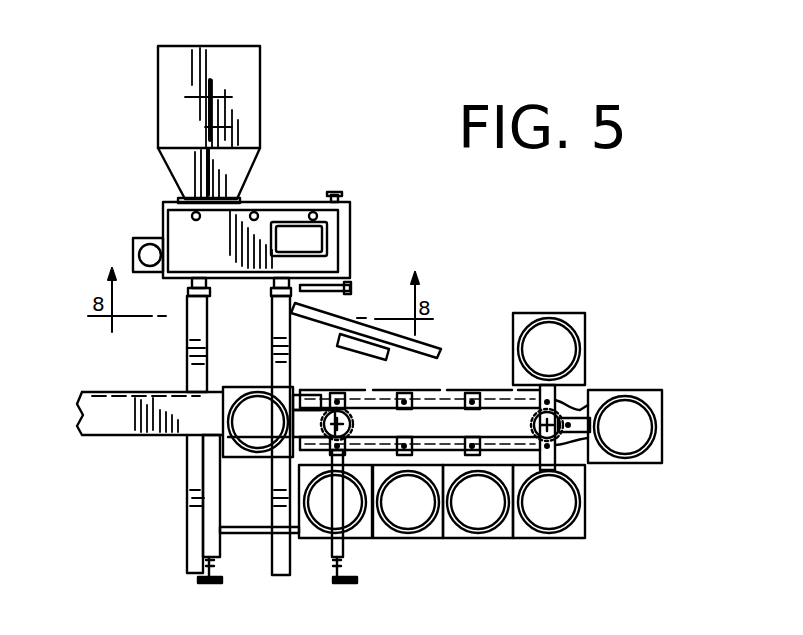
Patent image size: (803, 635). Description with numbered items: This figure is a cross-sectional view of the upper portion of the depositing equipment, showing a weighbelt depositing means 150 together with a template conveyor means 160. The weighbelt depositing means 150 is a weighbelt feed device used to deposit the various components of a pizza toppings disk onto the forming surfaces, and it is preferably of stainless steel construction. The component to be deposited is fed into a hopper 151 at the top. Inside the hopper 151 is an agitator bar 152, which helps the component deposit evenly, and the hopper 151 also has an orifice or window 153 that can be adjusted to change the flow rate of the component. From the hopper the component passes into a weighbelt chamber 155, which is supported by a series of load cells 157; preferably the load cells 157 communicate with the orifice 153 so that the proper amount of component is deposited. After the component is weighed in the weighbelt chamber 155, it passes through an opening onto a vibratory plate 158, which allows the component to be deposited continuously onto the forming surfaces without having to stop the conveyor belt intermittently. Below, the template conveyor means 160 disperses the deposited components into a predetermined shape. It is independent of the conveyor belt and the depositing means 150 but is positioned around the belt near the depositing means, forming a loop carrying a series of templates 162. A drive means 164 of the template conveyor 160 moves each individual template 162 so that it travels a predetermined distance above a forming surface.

The weighbelt depositing means 150 is at (293, 116).
The hopper 151 is at (158, 93).
The agitator bar 152 is at (207, 118).
The orifice or window 153 is at (237, 197).
The weighbelt chamber 155 is at (163, 228).
The load cells 157 is at (185, 290).
The vibratory plate 158 is at (383, 333).
The template conveyor means 160 is at (625, 482).
The templates 162 is at (590, 352).
The drive means 164 is at (560, 445).